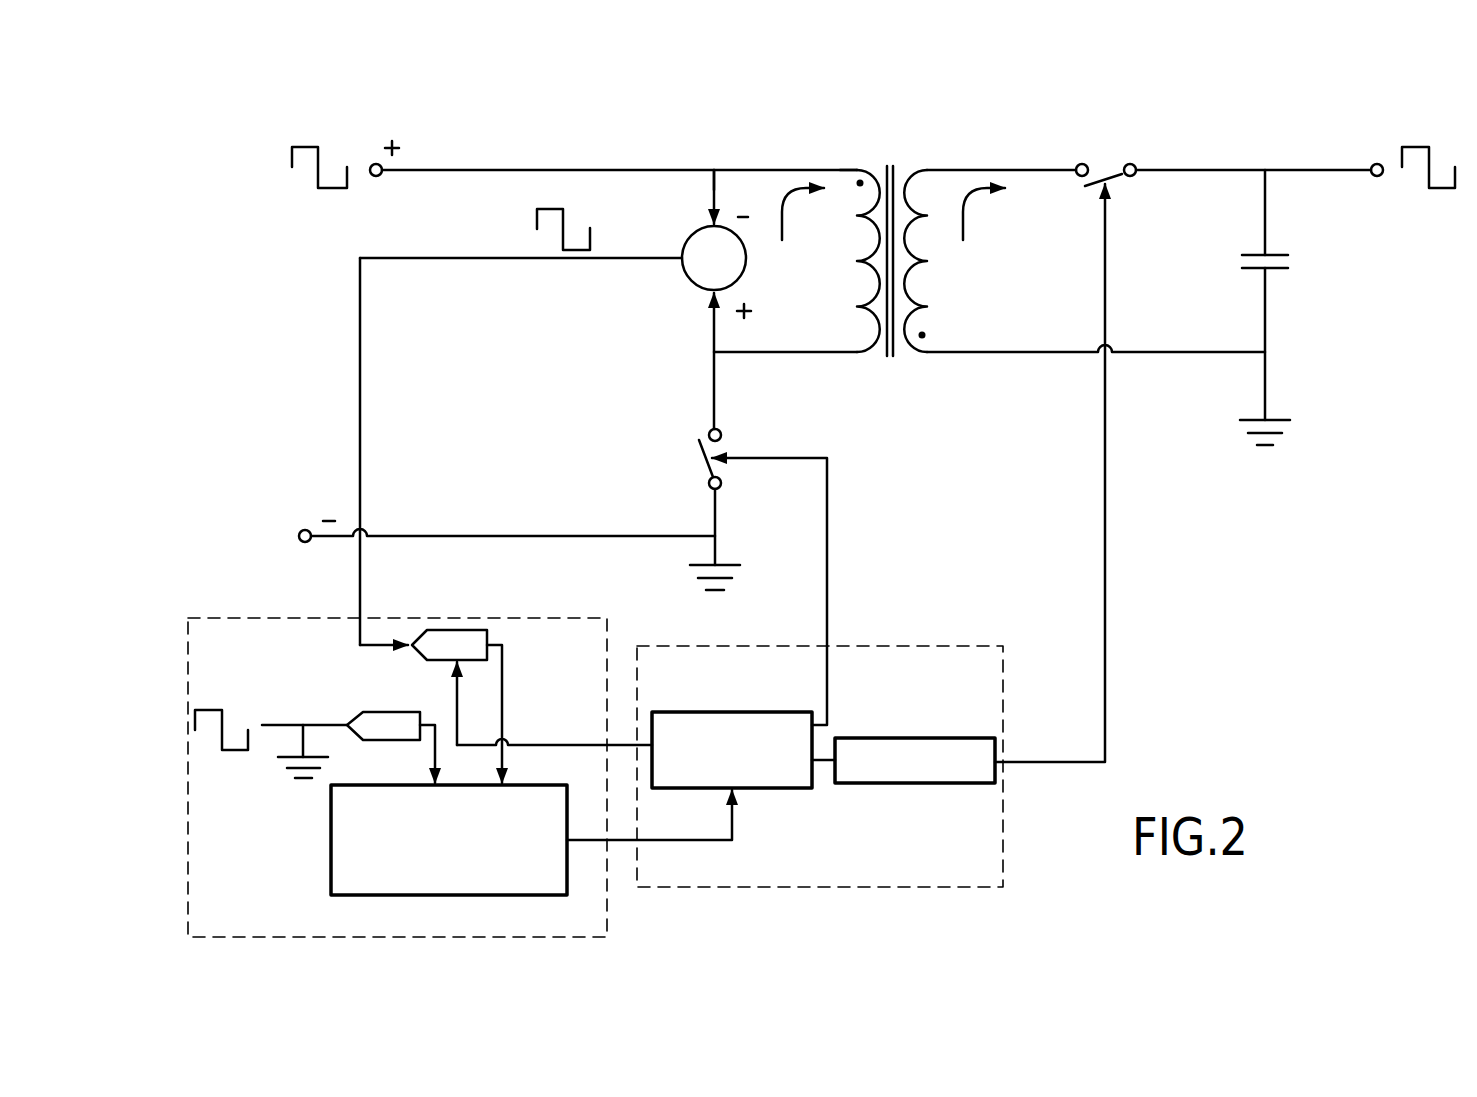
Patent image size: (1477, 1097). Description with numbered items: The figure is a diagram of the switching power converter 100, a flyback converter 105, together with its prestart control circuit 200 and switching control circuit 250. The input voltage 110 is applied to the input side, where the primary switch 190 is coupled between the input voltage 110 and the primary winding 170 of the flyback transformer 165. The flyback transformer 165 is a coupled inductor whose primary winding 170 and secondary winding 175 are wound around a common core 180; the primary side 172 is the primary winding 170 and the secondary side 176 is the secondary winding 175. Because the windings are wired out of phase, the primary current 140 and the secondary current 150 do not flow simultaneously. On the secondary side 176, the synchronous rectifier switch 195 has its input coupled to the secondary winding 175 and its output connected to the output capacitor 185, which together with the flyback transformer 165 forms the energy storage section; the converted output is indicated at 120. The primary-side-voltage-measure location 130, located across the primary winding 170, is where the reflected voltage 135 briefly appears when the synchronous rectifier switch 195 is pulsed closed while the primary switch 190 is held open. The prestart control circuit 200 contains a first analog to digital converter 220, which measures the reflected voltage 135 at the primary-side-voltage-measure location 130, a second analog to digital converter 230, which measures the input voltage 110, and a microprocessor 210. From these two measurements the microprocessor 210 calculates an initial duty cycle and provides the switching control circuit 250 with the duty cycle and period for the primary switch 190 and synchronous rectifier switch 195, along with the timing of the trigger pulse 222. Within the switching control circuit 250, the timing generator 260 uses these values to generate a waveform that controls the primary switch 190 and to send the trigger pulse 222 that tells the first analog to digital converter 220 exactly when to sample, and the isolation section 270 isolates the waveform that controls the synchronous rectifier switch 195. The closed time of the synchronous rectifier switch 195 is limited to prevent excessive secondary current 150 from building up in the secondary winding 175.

The switching power converter 100 is at (1372, 307).
The flyback converter 105 is at (721, 138).
The input voltage 110 is at (303, 147).
The output voltage signal 120 is at (1404, 146).
The primary-side-voltage-measure location 130 is at (690, 278).
The reflected voltage 135 is at (537, 228).
The primary current 140 is at (786, 212).
The secondary current 150 is at (967, 212).
The flyback transformer 165 is at (893, 160).
The primary winding 170 is at (860, 355).
The primary side 172 is at (808, 150).
The secondary winding 175 is at (920, 356).
The secondary side 176 is at (975, 150).
The common core 180 is at (892, 260).
The output capacitor 185 is at (1273, 255).
The primary switch 190 is at (709, 483).
The synchronous rectifier switch 195 is at (1122, 175).
The prestart control circuit 200 is at (188, 915).
The microprocessor 210 is at (331, 840).
The first analog to digital converter 220 is at (487, 637).
The trigger pulse 222 is at (457, 690).
The second analog to digital converter 230 is at (368, 712).
The switching control circuit 250 is at (1010, 870).
The timing generator 260 is at (760, 712).
The isolation section 270 is at (930, 738).